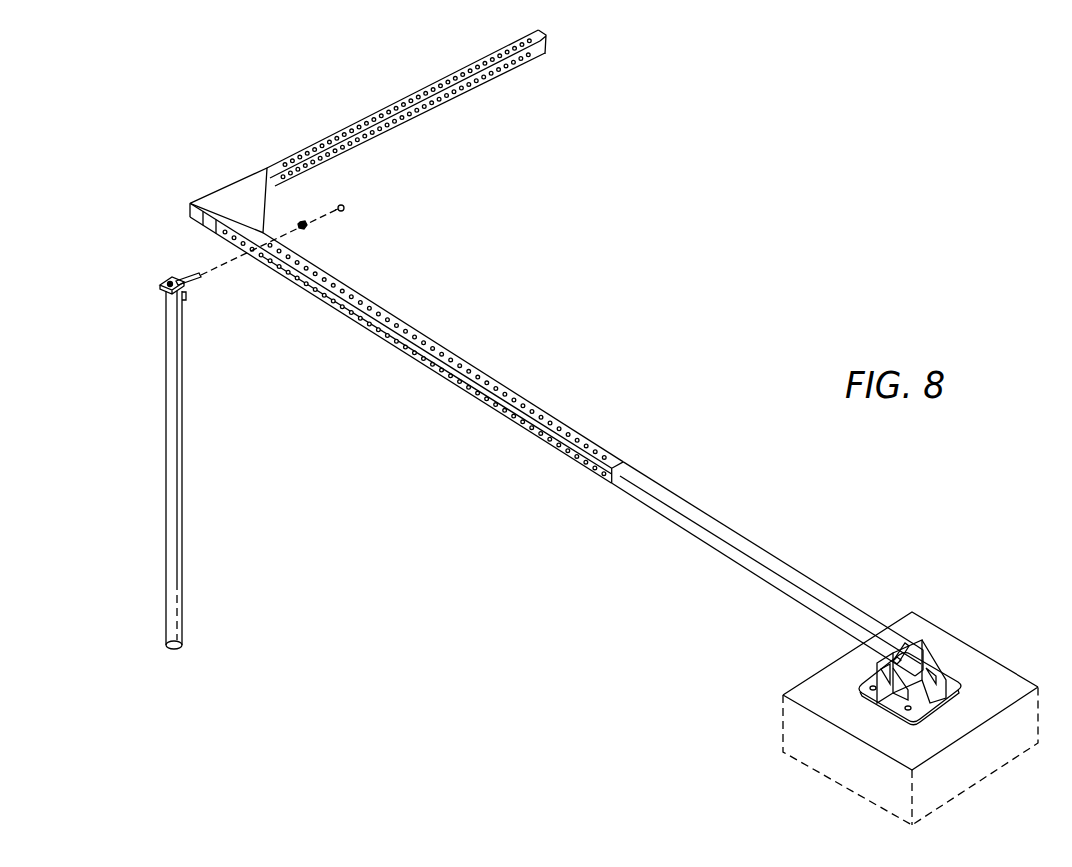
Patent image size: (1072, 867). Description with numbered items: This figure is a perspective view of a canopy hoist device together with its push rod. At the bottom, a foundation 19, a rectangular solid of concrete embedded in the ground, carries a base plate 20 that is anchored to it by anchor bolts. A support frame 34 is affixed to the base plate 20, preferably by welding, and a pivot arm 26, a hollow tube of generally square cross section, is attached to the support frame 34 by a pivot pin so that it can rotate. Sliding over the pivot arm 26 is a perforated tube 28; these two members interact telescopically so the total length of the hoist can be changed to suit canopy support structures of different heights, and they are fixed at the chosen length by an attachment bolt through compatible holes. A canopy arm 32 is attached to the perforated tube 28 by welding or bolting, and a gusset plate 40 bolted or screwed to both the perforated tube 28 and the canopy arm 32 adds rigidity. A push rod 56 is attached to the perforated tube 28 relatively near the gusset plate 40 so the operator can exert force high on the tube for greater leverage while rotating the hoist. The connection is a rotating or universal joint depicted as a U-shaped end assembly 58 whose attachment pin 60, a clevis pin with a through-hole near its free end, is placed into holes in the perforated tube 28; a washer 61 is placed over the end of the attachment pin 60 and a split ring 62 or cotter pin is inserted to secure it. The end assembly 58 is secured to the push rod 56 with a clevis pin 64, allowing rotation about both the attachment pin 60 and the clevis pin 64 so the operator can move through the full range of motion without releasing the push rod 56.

The foundation 19 is at (997, 660).
The base plate 20 is at (943, 708).
The pivot arm 26 is at (772, 553).
The perforated tube 28 is at (365, 296).
The canopy arm 32 is at (532, 57).
The support frame 34 is at (923, 647).
The gusset plate 40 is at (250, 198).
The push rod 56 is at (168, 544).
The U-shaped end assembly 58 is at (187, 294).
The attachment pin 60 is at (192, 274).
The washer 61 is at (307, 230).
The split ring 62 is at (346, 206).
The clevis pin 64 is at (168, 281).